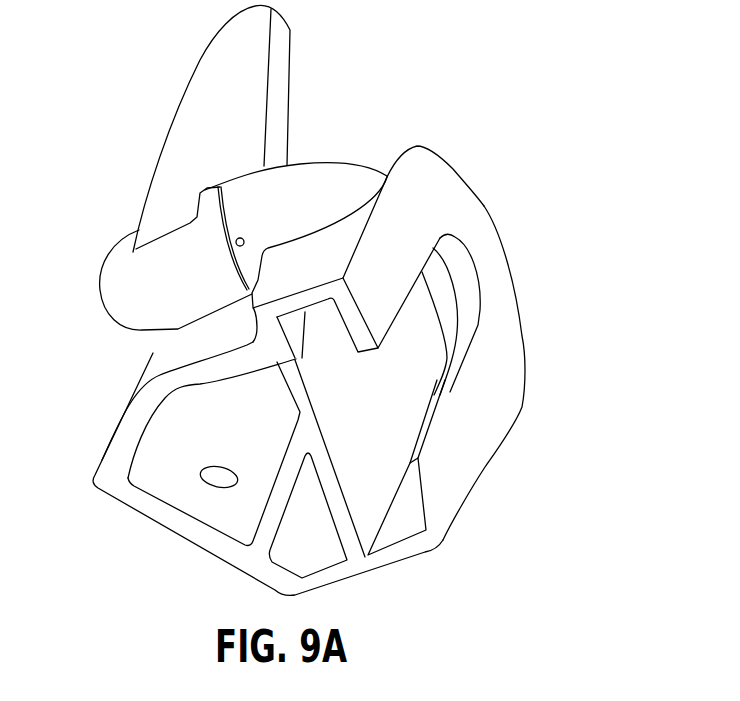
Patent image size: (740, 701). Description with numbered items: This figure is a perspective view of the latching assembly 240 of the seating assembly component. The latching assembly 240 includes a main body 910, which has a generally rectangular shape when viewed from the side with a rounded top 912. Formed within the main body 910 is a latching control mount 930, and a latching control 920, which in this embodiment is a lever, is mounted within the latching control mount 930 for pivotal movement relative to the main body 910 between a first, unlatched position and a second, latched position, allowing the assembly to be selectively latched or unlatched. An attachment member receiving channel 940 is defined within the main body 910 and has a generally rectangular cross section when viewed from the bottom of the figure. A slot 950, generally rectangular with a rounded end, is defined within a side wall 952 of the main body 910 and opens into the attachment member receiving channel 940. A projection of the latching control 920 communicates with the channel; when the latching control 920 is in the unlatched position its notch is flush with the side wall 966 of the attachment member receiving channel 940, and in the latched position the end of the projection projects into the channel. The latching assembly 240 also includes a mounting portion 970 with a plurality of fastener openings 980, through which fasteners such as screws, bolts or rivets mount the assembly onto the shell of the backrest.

The latching assembly 240 is at (558, 191).
The main body 910 is at (498, 448).
The rounded top 912 is at (455, 163).
The latching control 920 is at (220, 102).
The latching control mount 930 is at (320, 173).
The attachment member receiving channel 940 is at (375, 468).
The slot 950 is at (452, 385).
The side wall 952 is at (490, 393).
The side wall of the attachment member receiving channel 966 is at (292, 360).
The mounting portion 970 is at (162, 468).
The fastener openings 980 is at (213, 485).